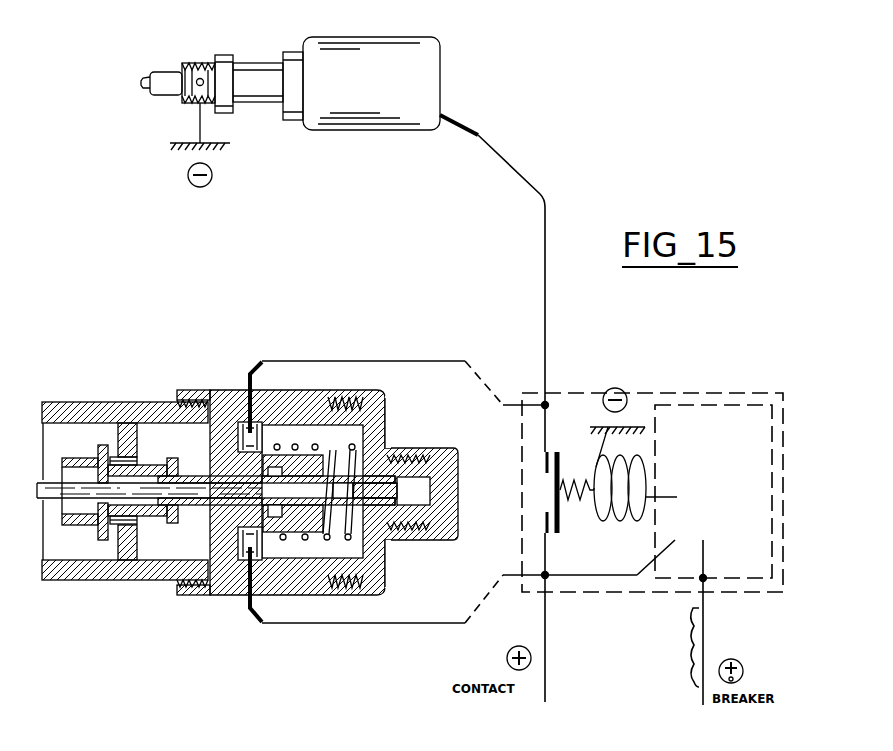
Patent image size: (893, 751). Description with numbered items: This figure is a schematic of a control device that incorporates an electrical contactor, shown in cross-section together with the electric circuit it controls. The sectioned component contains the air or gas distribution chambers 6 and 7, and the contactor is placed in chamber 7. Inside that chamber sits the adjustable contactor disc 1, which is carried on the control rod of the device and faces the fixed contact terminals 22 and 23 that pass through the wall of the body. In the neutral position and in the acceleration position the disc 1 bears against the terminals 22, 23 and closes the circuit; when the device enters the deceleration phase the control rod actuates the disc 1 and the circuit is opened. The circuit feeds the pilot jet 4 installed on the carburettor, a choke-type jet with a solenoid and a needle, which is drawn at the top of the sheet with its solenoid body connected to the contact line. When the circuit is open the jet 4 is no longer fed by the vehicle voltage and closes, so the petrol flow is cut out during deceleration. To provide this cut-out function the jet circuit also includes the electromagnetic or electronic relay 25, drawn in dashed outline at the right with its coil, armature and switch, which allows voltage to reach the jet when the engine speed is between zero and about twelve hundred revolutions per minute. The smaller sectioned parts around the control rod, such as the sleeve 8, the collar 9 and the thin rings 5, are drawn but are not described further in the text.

The adjustable contactor disc 1 is at (270, 440).
The pilot jet 4 is at (366, 112).
The insulating rings 5 is at (170, 546).
The air or gas distribution chamber 6 is at (88, 430).
The air or gas distribution chamber 7 is at (155, 438).
The sleeve 8 is at (105, 542).
The collar 9 is at (172, 560).
The fixed contact terminal 22 is at (238, 430).
The fixed contact terminal 23 is at (238, 560).
The relay 25 is at (676, 393).